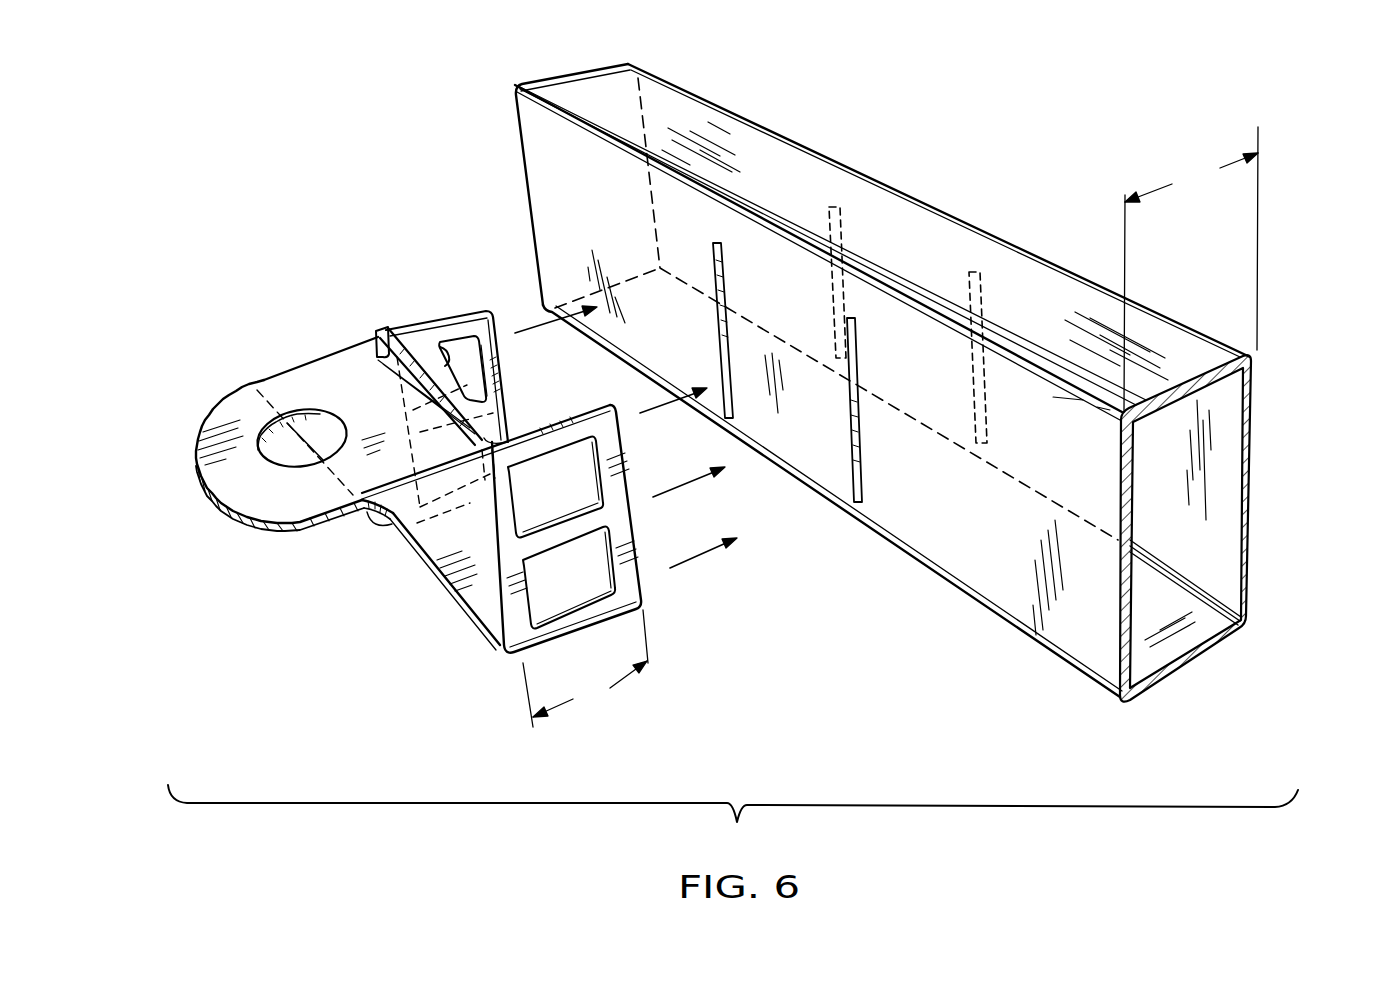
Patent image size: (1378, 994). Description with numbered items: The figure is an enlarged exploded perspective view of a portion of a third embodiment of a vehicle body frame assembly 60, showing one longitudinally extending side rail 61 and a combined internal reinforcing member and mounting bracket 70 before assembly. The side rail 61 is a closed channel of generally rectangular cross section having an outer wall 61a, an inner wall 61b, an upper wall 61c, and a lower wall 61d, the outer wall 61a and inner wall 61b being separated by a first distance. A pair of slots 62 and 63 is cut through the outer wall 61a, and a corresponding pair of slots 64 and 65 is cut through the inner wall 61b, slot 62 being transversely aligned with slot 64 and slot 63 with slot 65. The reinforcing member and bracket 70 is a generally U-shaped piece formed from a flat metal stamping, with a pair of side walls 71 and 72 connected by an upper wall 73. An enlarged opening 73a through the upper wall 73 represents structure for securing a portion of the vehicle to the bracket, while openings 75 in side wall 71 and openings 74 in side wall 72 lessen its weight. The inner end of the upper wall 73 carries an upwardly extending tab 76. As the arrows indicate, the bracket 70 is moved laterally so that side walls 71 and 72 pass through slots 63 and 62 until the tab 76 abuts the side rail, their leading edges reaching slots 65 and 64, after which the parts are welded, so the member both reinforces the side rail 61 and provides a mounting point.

The vehicle body frame assembly 60 is at (1038, 96).
The side rail 61 is at (1254, 352).
The outer wall 61a is at (1098, 642).
The inner wall 61b is at (1250, 511).
The upper wall 61c is at (1017, 280).
The lower wall 61d is at (1175, 652).
The slot 62 is at (713, 270).
The slot 63 is at (847, 368).
The slot 64 is at (826, 210).
The slot 65 is at (970, 280).
The combined internal reinforcing member and mounting bracket 70 is at (308, 610).
The side wall 71 is at (477, 575).
The side wall 72 is at (460, 332).
The upper wall 73 is at (280, 388).
The enlarged opening 73a is at (267, 423).
The openings 74 is at (440, 350).
The openings 75 is at (522, 540).
The upwardly extending tab 76 is at (385, 331).